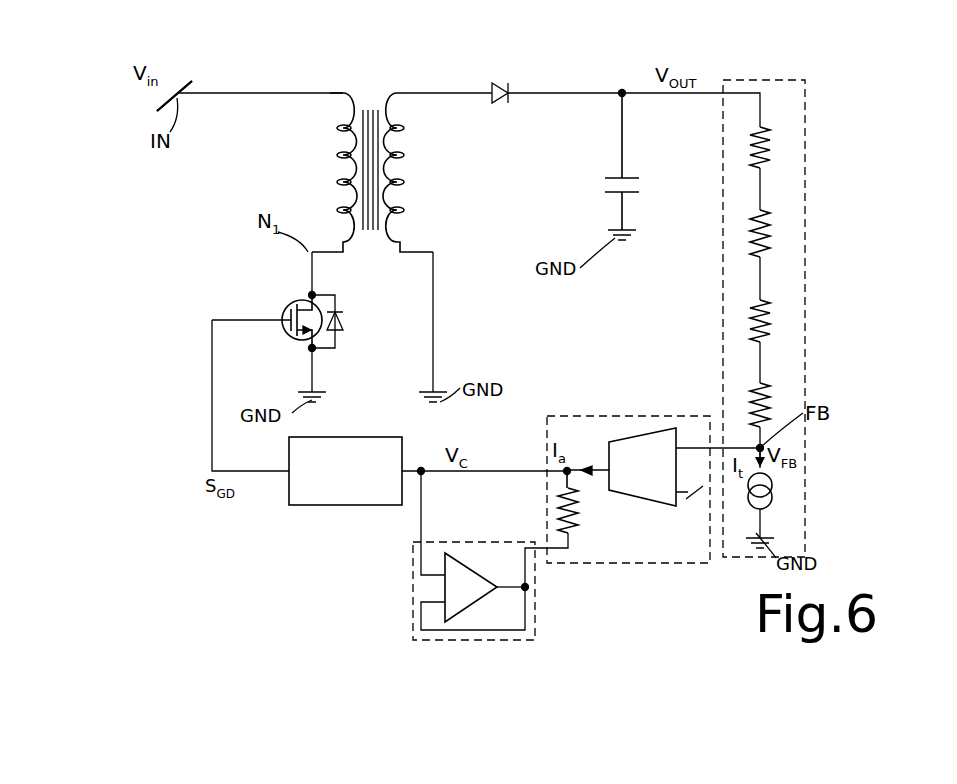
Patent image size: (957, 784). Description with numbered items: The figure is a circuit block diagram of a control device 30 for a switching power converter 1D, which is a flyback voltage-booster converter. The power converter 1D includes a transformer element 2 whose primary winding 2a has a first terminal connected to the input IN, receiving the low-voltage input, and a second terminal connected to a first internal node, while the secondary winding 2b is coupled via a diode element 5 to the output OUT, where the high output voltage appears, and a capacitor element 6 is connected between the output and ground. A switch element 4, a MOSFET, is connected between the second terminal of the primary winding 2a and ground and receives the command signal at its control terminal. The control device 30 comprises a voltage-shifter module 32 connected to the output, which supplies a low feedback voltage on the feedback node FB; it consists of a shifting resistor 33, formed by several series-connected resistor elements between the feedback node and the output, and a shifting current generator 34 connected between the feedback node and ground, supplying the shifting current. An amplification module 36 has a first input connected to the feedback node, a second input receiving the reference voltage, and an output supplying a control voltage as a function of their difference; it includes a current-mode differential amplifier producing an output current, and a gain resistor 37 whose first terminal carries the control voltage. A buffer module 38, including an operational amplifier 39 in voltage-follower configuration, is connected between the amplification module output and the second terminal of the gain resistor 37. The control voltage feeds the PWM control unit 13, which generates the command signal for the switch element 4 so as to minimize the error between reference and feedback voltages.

The power converter 1D is at (100, 130).
The transformer element 2 is at (370, 141).
The primary winding 2a is at (340, 158).
The secondary winding 2b is at (404, 182).
The switch element 4 is at (290, 336).
The diode element 5 is at (495, 86).
The capacitor element 6 is at (603, 183).
The PWM control unit 13 is at (357, 505).
The control device 30 is at (491, 492).
The voltage-shifter module 32 is at (764, 318).
The shifting resistor 33 is at (763, 277).
The shifting current generator 34 is at (773, 483).
The amplification module 36 is at (628, 472).
The gain resistor 37 is at (576, 536).
The buffer module 38 is at (427, 572).
The operational amplifier 39 is at (458, 568).